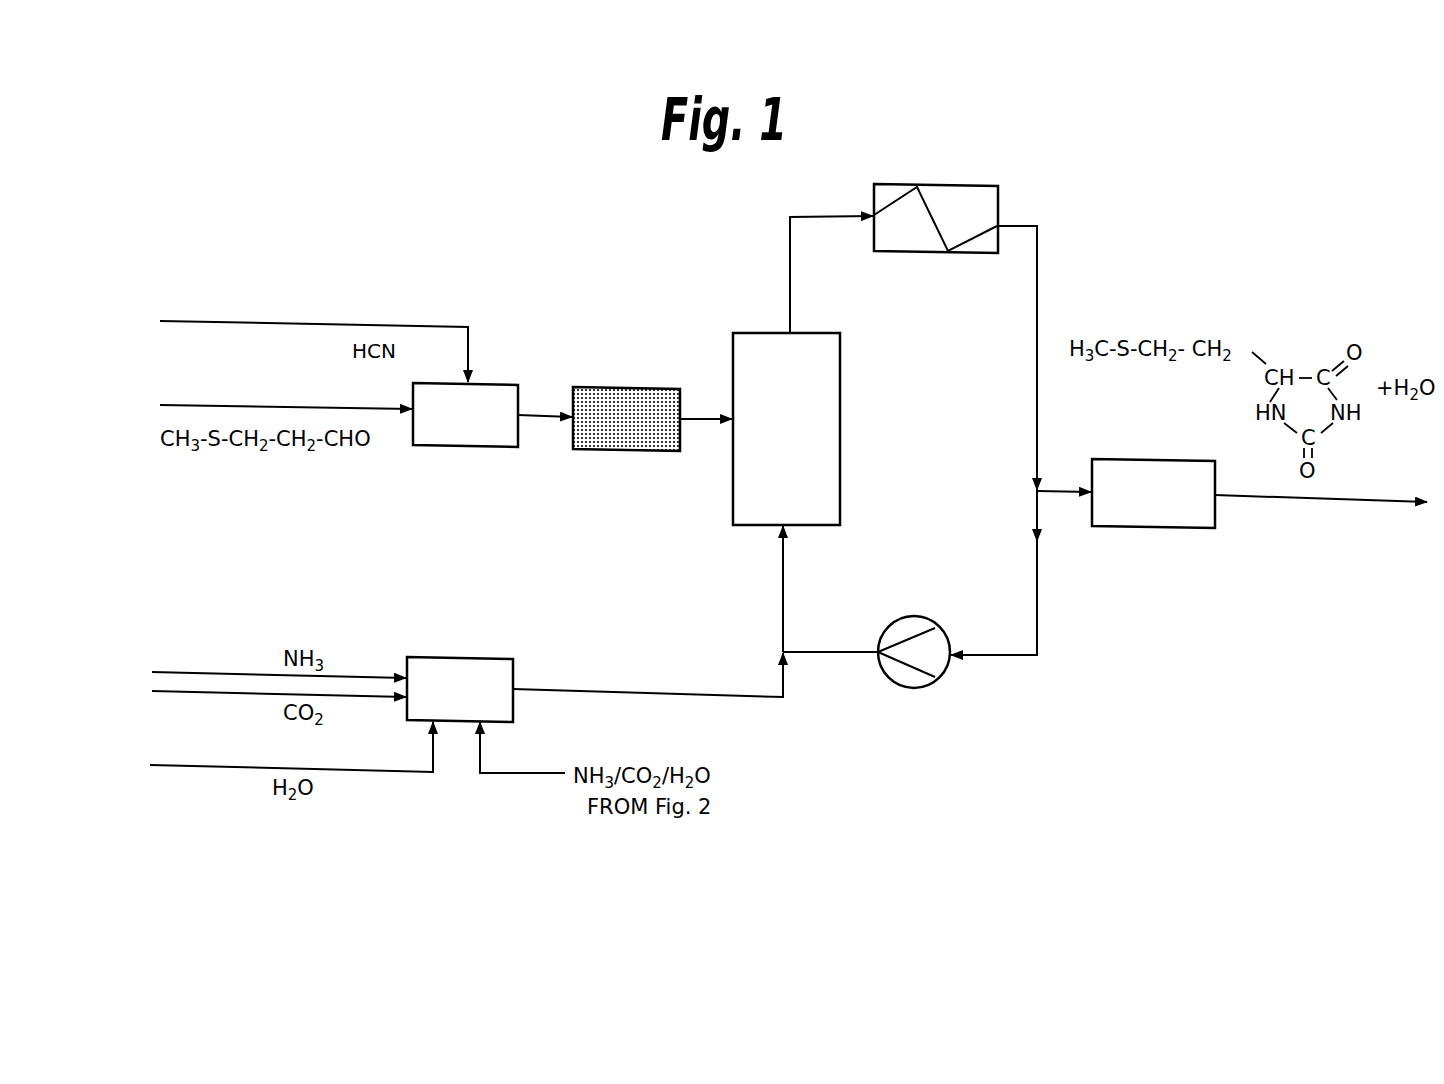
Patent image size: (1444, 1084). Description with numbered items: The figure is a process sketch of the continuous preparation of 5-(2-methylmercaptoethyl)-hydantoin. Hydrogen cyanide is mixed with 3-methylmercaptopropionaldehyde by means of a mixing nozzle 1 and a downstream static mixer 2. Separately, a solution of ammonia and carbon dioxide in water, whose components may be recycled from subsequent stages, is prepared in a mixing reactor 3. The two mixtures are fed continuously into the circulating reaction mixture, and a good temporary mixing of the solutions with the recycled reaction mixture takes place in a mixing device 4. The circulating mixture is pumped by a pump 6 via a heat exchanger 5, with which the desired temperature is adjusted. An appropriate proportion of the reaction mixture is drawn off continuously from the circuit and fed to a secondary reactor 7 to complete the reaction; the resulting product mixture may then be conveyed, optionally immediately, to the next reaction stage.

The mixing nozzle 1 is at (499, 382).
The static mixer 2 is at (628, 387).
The mixing reactor 3 is at (470, 657).
The mixing device 4 is at (840, 375).
The heat exchanger 5 is at (938, 184).
The pump 6 is at (913, 617).
The secondary reactor 7 is at (1118, 459).